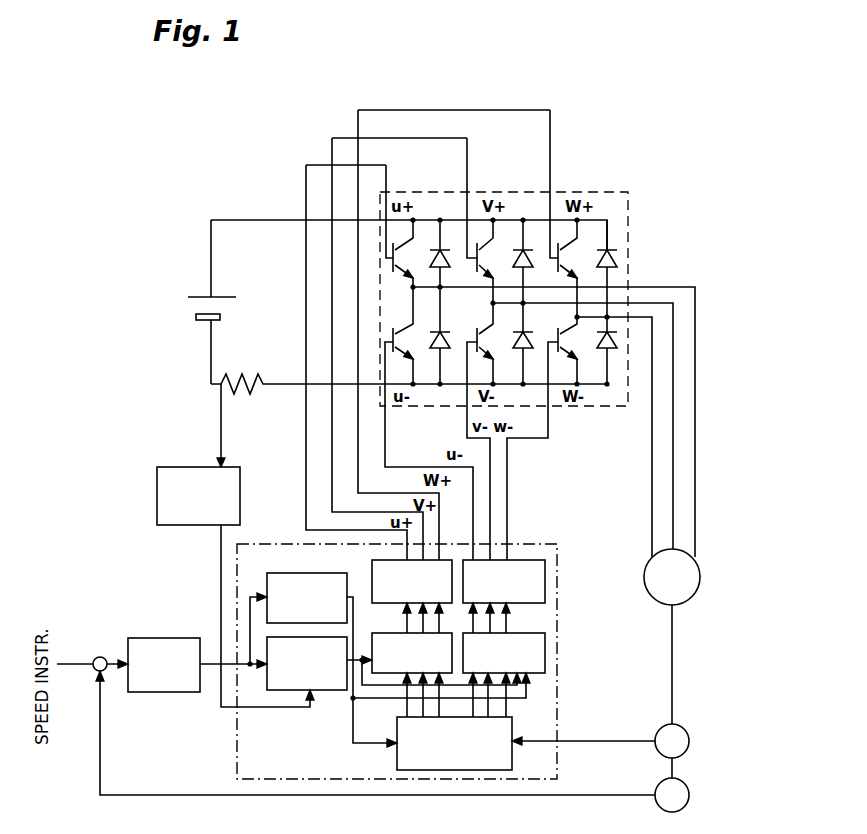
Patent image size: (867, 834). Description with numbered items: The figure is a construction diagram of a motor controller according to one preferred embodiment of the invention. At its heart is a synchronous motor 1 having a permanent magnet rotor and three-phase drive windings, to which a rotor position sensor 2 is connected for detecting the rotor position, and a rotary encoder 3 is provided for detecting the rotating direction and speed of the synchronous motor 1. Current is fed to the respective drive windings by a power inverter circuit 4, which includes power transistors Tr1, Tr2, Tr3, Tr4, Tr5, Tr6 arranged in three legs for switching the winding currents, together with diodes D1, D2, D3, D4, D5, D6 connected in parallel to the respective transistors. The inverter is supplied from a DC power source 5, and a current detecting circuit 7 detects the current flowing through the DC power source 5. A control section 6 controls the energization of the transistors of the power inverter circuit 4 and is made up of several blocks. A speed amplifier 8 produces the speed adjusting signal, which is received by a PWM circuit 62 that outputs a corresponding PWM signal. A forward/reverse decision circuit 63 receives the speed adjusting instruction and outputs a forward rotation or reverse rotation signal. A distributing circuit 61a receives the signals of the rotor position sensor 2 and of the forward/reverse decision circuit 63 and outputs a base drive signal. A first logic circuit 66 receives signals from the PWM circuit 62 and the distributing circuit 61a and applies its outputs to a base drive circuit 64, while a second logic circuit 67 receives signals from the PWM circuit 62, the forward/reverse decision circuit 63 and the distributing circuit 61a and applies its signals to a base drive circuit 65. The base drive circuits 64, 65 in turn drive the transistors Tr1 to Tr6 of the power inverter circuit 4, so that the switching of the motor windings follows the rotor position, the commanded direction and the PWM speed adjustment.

The synchronous motor 1 is at (700, 575).
The rotor position sensor 2 is at (689, 736).
The rotary encoder 3 is at (689, 791).
The power inverter circuit 4 is at (585, 192).
The DC power source 5 is at (200, 304).
The control section 6 is at (558, 570).
The current detecting circuit 7 is at (157, 493).
The speed amplifier 8 is at (172, 638).
The distributing circuit 61a is at (512, 724).
The PWM circuit 62 is at (290, 690).
The forward/reverse decision circuit 63 is at (285, 573).
The base drive circuit 64 is at (445, 560).
The base drive circuit 65 is at (520, 560).
The first logic circuit 66 is at (370, 668).
The second logic circuit 67 is at (545, 655).
The power transistor Tr1 is at (410, 262).
The power transistor Tr2 is at (497, 262).
The power transistor Tr3 is at (577, 262).
The power transistor Tr4 is at (405, 350).
The power transistor Tr5 is at (488, 340).
The power transistor Tr6 is at (572, 343).
The diode D1 is at (452, 270).
The diode D2 is at (532, 262).
The diode D3 is at (612, 258).
The diode D4 is at (447, 352).
The diode D5 is at (527, 352).
The diode D6 is at (620, 352).